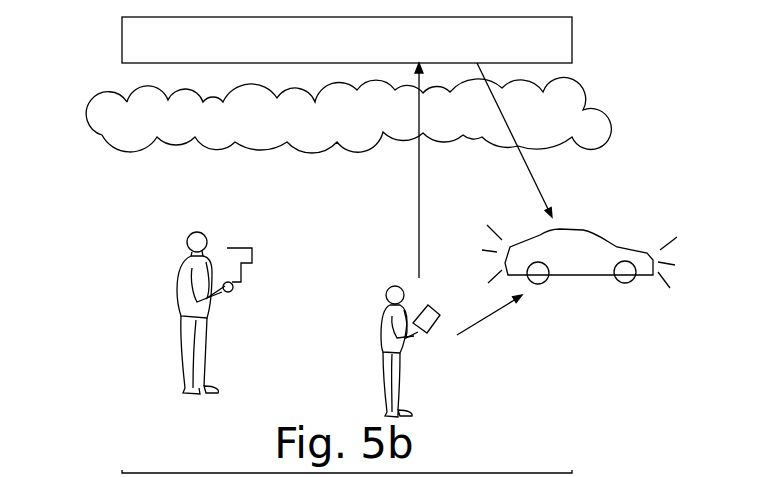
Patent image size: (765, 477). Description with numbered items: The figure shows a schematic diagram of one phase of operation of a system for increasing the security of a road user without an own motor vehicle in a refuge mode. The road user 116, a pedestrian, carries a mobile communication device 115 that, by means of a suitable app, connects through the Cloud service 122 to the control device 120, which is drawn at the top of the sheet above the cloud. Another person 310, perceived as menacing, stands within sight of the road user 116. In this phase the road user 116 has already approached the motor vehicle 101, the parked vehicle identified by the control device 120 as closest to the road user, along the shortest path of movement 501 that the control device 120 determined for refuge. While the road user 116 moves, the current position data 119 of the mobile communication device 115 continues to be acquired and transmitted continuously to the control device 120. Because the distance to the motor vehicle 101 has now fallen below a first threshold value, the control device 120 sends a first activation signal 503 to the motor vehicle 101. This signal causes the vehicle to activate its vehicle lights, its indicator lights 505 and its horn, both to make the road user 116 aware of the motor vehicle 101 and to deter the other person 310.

The control device 120 is at (369, 50).
The Cloud service 122 is at (369, 125).
The current position data 119 is at (412, 197).
The first activation signal 503 is at (546, 173).
The shortest path of movement 501 is at (497, 322).
The motor vehicle 101 is at (623, 246).
The indicator lights 505 is at (650, 300).
The other person 310 is at (178, 300).
The road user 116 is at (382, 346).
The mobile communication device 115 is at (430, 333).